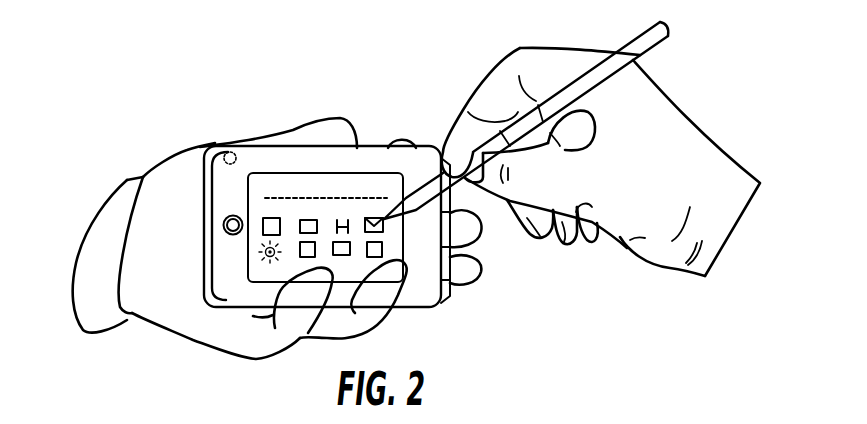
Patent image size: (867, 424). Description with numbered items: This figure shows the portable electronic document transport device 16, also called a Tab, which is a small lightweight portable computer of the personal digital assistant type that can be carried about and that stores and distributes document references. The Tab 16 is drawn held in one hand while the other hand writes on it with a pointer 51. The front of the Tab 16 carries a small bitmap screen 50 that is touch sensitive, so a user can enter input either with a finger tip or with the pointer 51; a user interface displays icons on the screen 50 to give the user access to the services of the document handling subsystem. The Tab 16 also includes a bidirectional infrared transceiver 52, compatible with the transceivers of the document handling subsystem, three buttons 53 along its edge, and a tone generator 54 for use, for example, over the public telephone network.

The portable electronic document transport device 16 is at (303, 155).
The bitmap screen 50 is at (362, 173).
The pointer 51 is at (645, 46).
The bidirectional IR transceiver 52 is at (400, 140).
The buttons 53 is at (447, 224).
The tone generator 54 is at (232, 152).